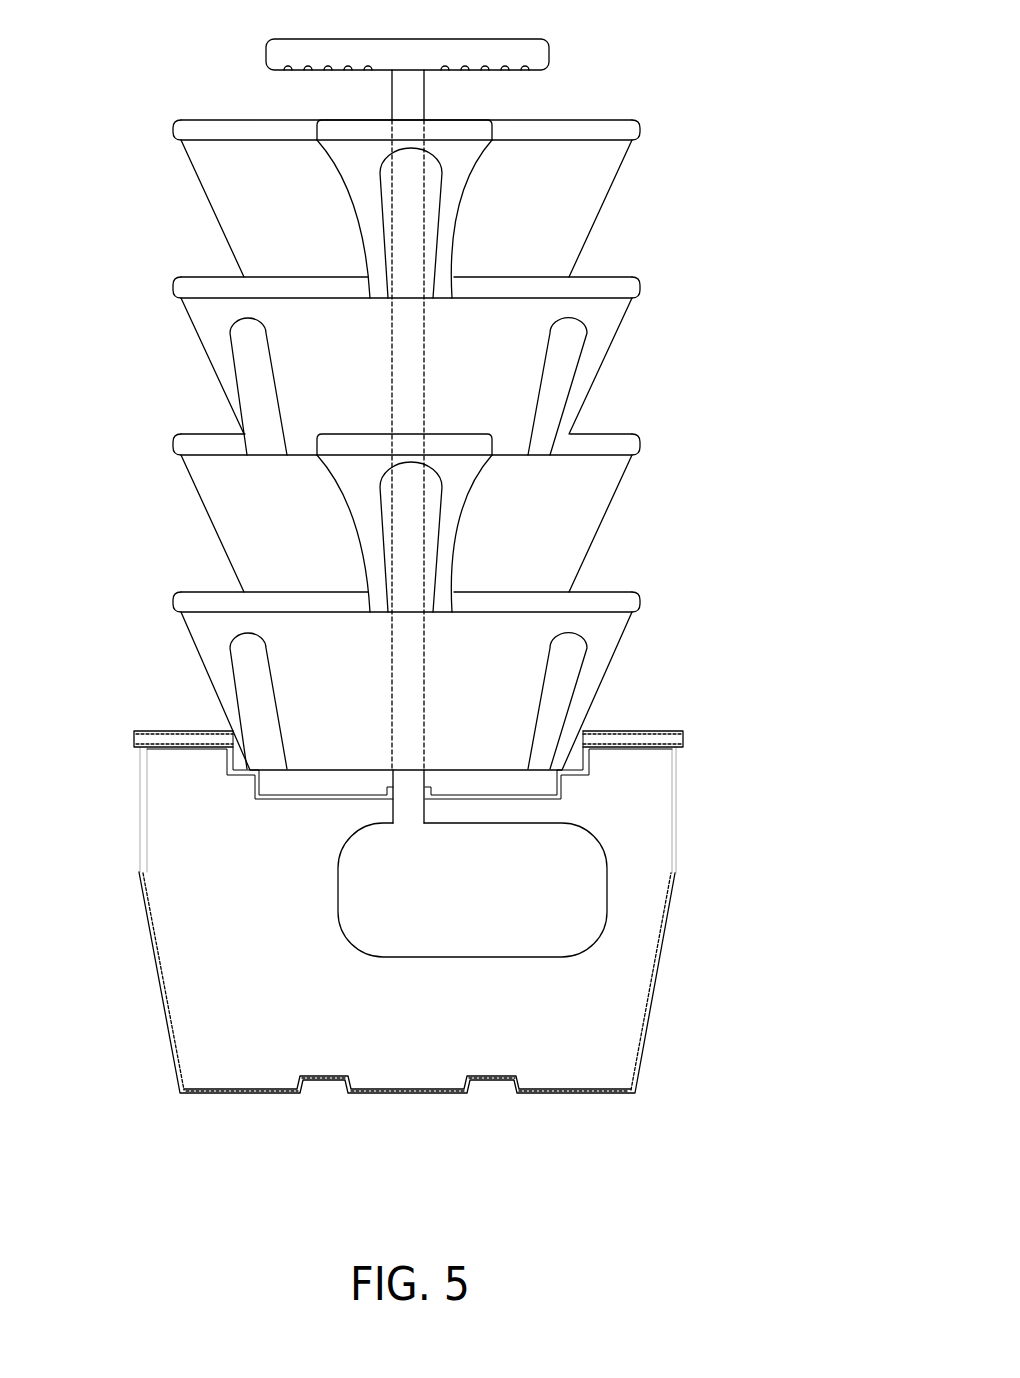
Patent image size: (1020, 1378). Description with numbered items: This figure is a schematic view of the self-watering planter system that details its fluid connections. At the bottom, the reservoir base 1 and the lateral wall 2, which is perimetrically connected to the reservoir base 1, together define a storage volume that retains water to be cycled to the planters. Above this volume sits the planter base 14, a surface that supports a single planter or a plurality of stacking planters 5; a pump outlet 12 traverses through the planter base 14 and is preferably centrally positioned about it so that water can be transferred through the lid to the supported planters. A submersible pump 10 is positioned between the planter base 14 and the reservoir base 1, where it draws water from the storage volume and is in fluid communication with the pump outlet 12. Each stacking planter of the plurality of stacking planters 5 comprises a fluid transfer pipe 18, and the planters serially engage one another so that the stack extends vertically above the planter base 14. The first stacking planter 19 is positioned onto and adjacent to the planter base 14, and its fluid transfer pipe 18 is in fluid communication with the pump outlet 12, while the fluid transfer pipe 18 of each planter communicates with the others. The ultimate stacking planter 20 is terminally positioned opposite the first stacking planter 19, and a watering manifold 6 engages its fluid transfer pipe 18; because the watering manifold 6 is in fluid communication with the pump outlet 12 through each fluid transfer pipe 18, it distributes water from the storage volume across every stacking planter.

The reservoir base 1 is at (461, 934).
The lateral wall 2 is at (668, 905).
The plurality of stacking planters 5 is at (477, 445).
The watering manifold 6 is at (537, 53).
The submersible pump 10 is at (422, 933).
The pump outlet 12 is at (403, 790).
The planter base 14 is at (456, 731).
The fluid transfer pipe 18 is at (415, 220).
The first stacking planter 19 is at (595, 648).
The ultimate stacking planter 20 is at (592, 193).